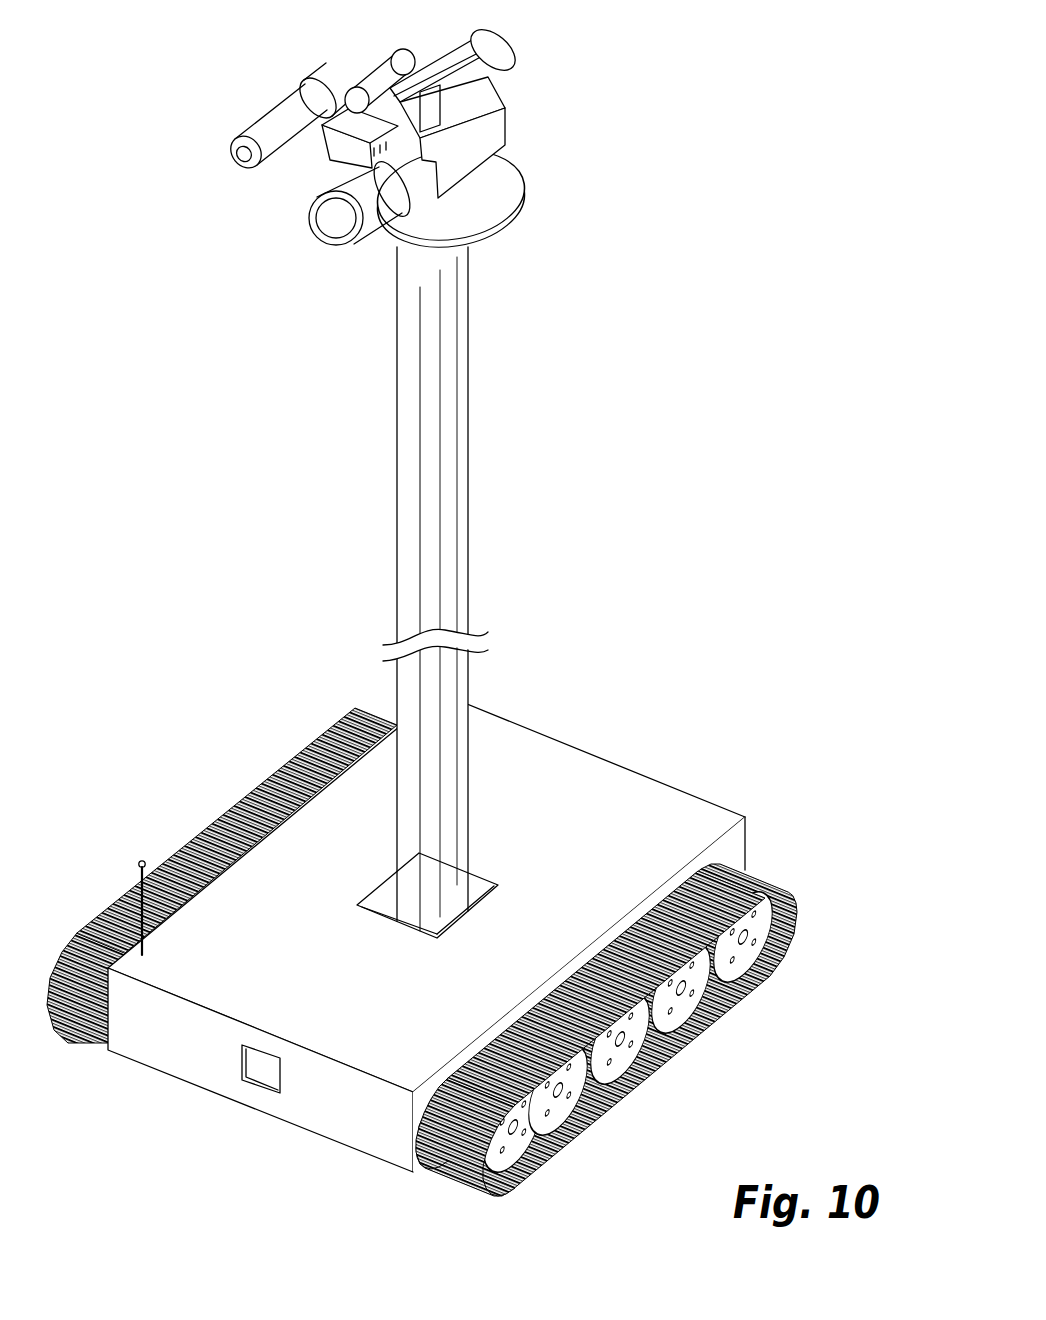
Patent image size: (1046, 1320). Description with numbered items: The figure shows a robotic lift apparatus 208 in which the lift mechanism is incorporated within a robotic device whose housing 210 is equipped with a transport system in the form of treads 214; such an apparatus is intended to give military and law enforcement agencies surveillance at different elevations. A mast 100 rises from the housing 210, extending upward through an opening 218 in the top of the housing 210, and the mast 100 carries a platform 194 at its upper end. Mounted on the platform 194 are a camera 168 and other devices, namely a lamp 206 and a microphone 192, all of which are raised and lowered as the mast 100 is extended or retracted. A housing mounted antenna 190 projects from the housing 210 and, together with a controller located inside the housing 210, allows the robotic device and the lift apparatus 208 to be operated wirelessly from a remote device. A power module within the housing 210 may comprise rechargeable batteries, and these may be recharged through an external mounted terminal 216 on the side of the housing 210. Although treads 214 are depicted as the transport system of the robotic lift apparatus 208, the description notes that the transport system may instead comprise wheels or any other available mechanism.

The mast 100 is at (485, 443).
The camera 168 is at (321, 123).
The antenna 190 is at (142, 860).
The microphone 192 is at (232, 162).
The platform 194 is at (522, 215).
The lamp 206 is at (388, 62).
The robotic lift apparatus 208 is at (475, 677).
The housing 210 is at (612, 790).
The treads 214 is at (797, 955).
The external mounted terminal 216 is at (268, 1077).
The opening 218 is at (385, 893).